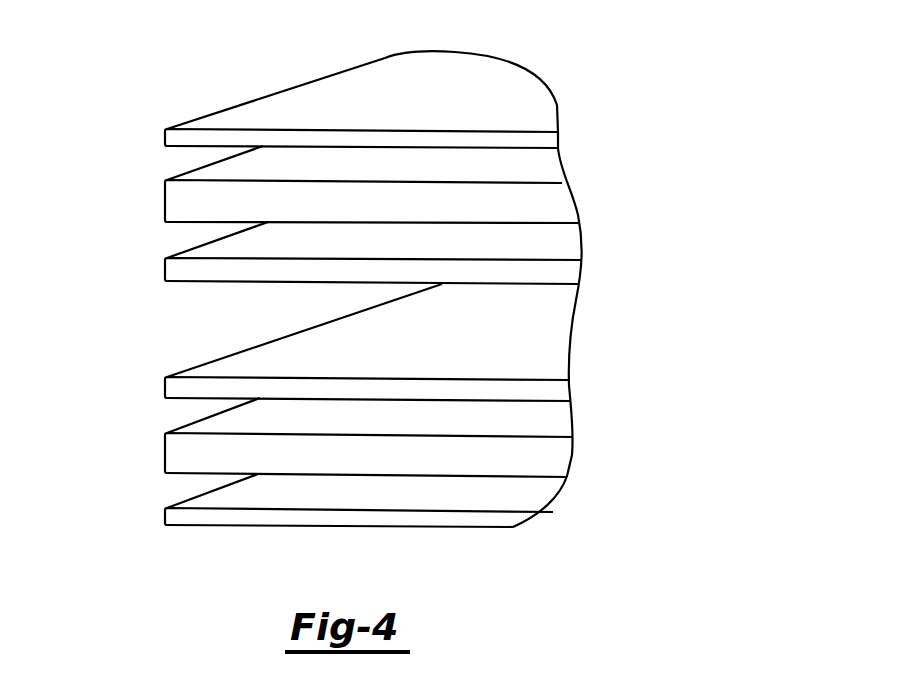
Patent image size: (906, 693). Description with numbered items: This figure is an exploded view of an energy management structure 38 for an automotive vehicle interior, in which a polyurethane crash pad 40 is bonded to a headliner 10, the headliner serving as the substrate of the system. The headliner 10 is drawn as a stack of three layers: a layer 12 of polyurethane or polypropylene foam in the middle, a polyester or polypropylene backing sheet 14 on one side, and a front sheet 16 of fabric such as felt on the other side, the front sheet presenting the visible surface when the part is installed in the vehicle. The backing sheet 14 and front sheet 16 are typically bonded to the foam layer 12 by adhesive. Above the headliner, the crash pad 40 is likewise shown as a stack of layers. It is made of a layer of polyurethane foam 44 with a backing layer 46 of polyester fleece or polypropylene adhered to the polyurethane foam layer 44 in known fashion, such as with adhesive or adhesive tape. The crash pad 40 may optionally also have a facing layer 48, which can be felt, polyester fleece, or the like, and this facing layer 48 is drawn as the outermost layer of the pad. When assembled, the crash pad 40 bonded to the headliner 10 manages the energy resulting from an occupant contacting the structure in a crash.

The headliner 10 is at (139, 452).
The layer of polyurethane or polypropylene foam 12 is at (165, 467).
The backing sheet 14 is at (165, 385).
The front sheet 16 is at (163, 517).
The energy management structure 38 is at (163, 104).
The crash pad 40 is at (144, 225).
The layer of polyurethane foam 44 is at (165, 200).
The backing layer 46 is at (165, 272).
The facing layer 48 is at (165, 138).